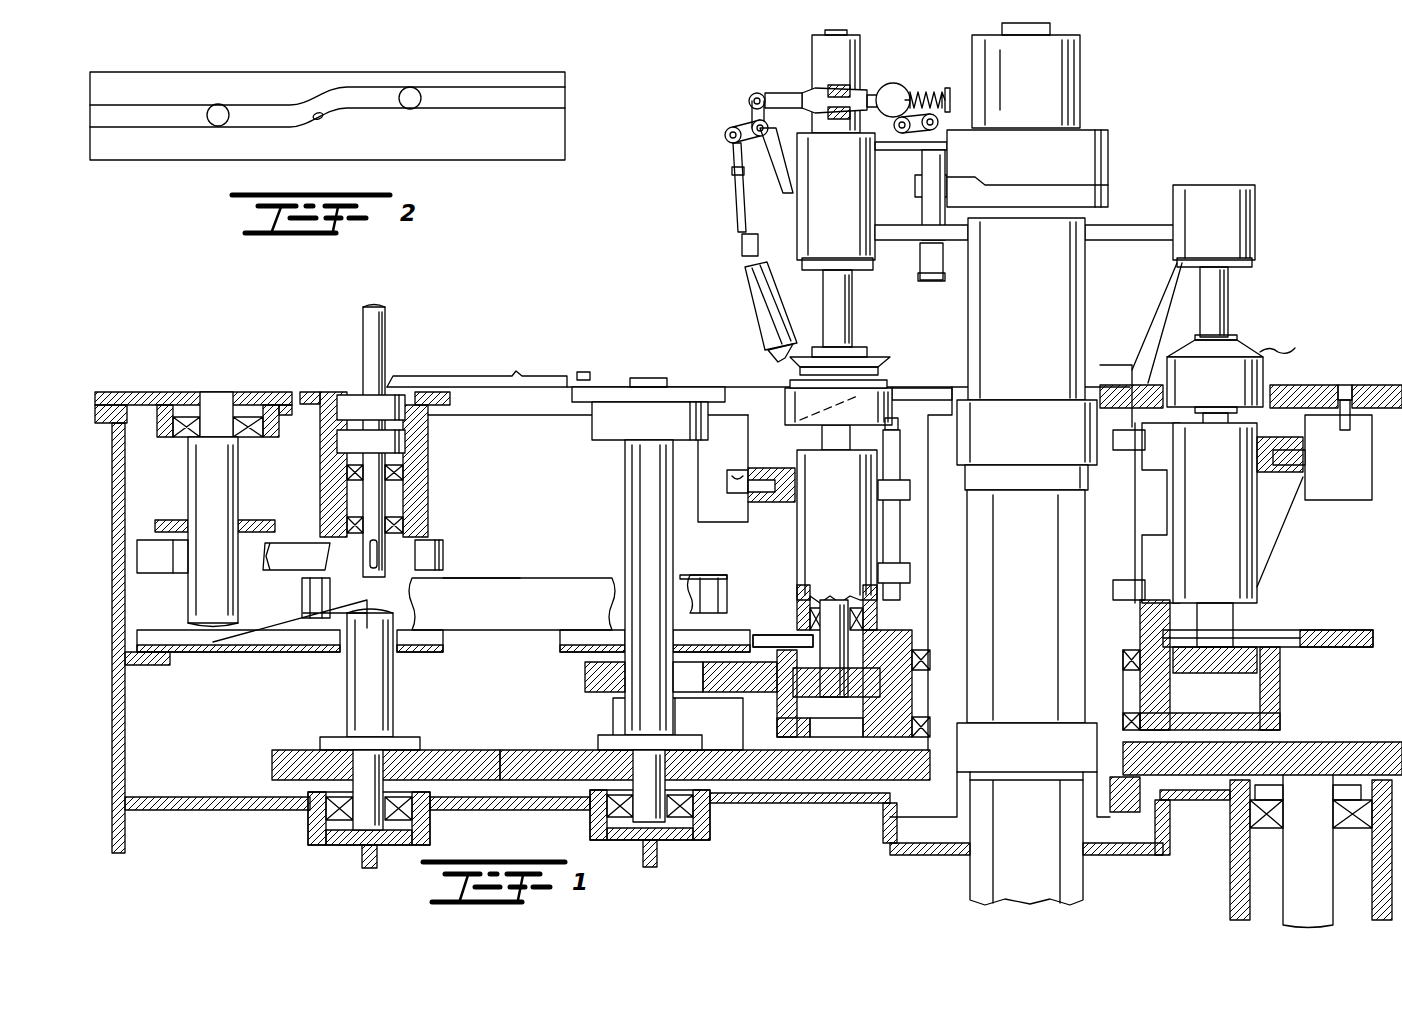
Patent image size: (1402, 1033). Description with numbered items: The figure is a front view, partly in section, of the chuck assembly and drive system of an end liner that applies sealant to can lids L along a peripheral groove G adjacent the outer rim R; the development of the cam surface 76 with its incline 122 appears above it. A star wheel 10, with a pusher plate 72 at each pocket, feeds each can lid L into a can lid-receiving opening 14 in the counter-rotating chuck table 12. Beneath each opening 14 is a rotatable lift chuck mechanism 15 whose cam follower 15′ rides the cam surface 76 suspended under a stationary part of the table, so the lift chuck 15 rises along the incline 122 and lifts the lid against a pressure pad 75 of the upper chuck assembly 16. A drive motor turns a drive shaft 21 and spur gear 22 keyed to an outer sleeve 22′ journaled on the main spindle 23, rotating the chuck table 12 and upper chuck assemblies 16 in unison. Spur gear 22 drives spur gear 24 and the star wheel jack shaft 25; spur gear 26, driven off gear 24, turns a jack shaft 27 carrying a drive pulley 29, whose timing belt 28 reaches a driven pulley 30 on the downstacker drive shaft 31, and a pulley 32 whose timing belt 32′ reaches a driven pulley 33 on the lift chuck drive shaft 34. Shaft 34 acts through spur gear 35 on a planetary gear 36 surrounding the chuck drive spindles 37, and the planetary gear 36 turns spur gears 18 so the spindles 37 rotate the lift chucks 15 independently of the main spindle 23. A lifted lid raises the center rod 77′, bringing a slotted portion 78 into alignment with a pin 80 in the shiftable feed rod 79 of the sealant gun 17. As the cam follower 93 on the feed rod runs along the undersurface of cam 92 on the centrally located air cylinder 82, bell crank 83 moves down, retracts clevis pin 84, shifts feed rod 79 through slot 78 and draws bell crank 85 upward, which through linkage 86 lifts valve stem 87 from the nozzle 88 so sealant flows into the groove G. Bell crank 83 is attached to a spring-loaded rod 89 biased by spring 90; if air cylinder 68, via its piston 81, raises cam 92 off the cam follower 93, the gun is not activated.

In FIG. 1, the star wheel 10 is at (568, 355).
In FIG. 1, the chuck table 12 is at (1147, 383).
In FIG. 1, the can lid-receiving opening 14 is at (797, 425).
In FIG. 1, the lift chuck mechanism 15 is at (783, 420).
In FIG. 2, the cam follower 15′ is at (218, 104).
In FIG. 1, the cam follower 15′ is at (737, 493).
In FIG. 1, the upper chuck assembly 16 is at (853, 302).
In FIG. 1, the sealant gun 17 is at (752, 318).
In FIG. 1, the spur gears 18 is at (888, 687).
In FIG. 1, the drive shaft 21 is at (1297, 890).
In FIG. 1, the spur gear 22 is at (1193, 747).
In FIG. 1, the outer sleeve 22′ is at (1073, 858).
In FIG. 1, the main spindle 23 is at (1048, 880).
In FIG. 1, the spur gear 24 is at (737, 770).
In FIG. 1, the star wheel jack shaft 25 is at (643, 810).
In FIG. 1, the spur gear 26 is at (295, 757).
In FIG. 1, the jack shaft 27 is at (210, 488).
In FIG. 1, the timing belt 28 is at (440, 550).
In FIG. 1, the drive pulley 29 is at (283, 540).
In FIG. 1, the driven pulley 30 is at (445, 578).
In FIG. 1, the downstacker drive shaft 31 is at (373, 500).
In FIG. 1, the pulley 32 is at (307, 620).
In FIG. 1, the timing belt 32′ is at (520, 617).
In FIG. 1, the driven pulley 33 is at (730, 574).
In FIG. 1, the lift chuck drive shaft 34 is at (688, 597).
In FIG. 1, the spur gear 35 is at (585, 673).
In FIG. 1, the planetary gear 36 is at (783, 690).
In FIG. 1, the chuck drive spindles 37 is at (860, 657).
In FIG. 1, the air cylinder 68 is at (1082, 37).
In FIG. 1, the pusher plate 72 is at (460, 395).
In FIG. 1, the pressure pads 75 is at (873, 353).
In FIG. 2, the cam surface 76 is at (471, 107).
In FIG. 1, the cam surface 76 is at (751, 480).
In FIG. 1, the center rod 77′ is at (805, 220).
In FIG. 1, the slotted portion 78 is at (828, 100).
In FIG. 1, the feed rod 79 is at (765, 100).
In FIG. 1, the pin 80 is at (823, 100).
In FIG. 1, the piston 81 is at (1060, 83).
In FIG. 1, the air cylinder 82 is at (983, 40).
In FIG. 1, the bell crank 83 is at (943, 120).
In FIG. 1, the clevis pin 84 is at (890, 90).
In FIG. 1, the bell crank 85 is at (750, 128).
In FIG. 1, the linkage 86 is at (740, 222).
In FIG. 1, the valve stem 87 is at (747, 282).
In FIG. 1, the nozzle 88 is at (780, 358).
In FIG. 1, the spring-loaded rod 89 is at (935, 163).
In FIG. 1, the spring 90 is at (920, 93).
In FIG. 1, the cam 92 is at (1110, 160).
In FIG. 1, the cam follower 93 is at (942, 190).
In FIG. 2, the incline 122 is at (322, 118).
In FIG. 1, the peripheral groove G is at (893, 386).
In FIG. 1, the can lid L is at (452, 368).
In FIG. 1, the outer surrounding rim R is at (912, 387).